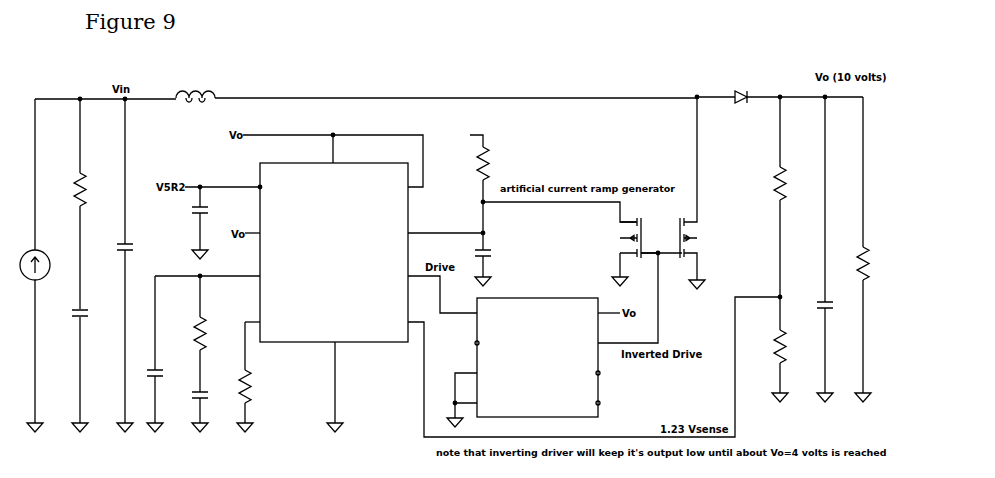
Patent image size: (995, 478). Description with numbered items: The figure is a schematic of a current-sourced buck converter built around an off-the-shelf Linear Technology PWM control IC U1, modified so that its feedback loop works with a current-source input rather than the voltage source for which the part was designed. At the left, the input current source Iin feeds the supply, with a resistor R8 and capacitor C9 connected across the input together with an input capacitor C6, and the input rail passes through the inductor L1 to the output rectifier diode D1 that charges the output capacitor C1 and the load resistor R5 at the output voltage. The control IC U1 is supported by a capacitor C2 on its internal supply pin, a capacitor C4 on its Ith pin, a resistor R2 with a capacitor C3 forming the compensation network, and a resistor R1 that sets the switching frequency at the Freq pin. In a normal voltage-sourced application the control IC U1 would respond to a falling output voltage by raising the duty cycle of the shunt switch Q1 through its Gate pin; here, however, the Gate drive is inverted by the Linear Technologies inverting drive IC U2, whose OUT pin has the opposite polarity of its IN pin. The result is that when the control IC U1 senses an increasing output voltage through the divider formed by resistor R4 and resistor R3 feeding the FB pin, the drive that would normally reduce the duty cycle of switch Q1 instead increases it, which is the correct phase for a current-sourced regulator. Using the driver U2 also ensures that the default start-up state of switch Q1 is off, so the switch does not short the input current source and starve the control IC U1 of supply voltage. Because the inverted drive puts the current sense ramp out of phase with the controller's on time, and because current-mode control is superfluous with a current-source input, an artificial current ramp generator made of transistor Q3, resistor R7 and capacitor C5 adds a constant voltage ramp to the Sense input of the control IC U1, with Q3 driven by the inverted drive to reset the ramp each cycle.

The input current source (2 amps) Iin is at (50, 265).
The resistor 100 ohm R8 is at (92, 261).
The capacitor 6.8 uF C9 is at (92, 363).
The capacitor .68 uF C6 is at (136, 265).
The inductor 6.8 mH L1 is at (195, 95).
The capacitor 4.7 uF C2 is at (212, 223).
The capacitor 47 pF C4 is at (164, 354).
The resistor 22k R2 is at (211, 334).
The capacitor 6.8 nF C3 is at (211, 405).
The resistor 80.6K R1 is at (262, 377).
The control IC U1 is at (334, 291).
The resistor R7 is at (472, 182).
The capacitor C5 is at (503, 259).
The transistor Q3 is at (610, 252).
The switch Q1 is at (715, 193).
The diode MBRB2545CT D1 is at (743, 82).
The resistor 100K R4 is at (764, 197).
The resistor 14.1K R3 is at (797, 349).
The capacitor 220 uF C1 is at (838, 249).
The resistor 10 ohm load R5 is at (871, 249).
The inverting drive IC U2 is at (537, 360).